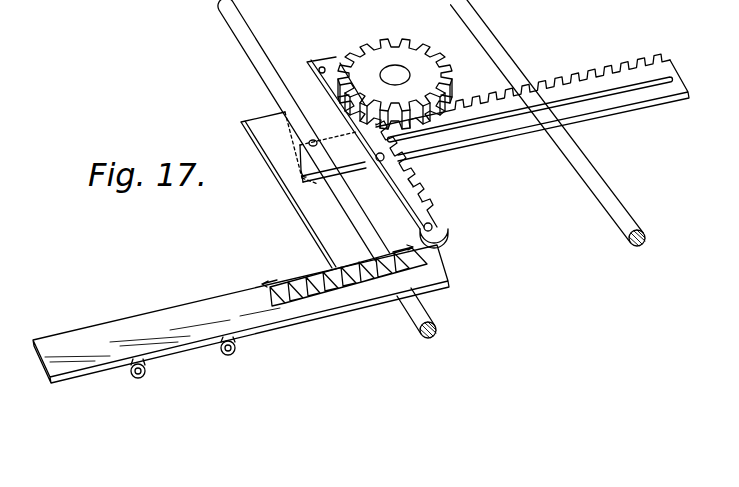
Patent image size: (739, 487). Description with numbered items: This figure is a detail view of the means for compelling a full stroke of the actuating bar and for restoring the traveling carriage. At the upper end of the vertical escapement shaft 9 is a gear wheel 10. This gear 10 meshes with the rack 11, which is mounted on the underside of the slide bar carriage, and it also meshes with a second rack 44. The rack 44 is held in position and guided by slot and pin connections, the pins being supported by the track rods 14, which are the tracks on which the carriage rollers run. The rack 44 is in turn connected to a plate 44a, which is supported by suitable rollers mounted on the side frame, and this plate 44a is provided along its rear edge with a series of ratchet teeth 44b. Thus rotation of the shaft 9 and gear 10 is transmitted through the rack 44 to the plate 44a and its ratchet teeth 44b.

The vertical shaft 9 is at (395, 75).
The gear 10 is at (425, 57).
The rack 11 is at (436, 217).
The tracks 14 is at (617, 203).
The rack 44 is at (499, 127).
The plate 44a is at (241, 314).
The ratchet teeth 44b is at (294, 302).